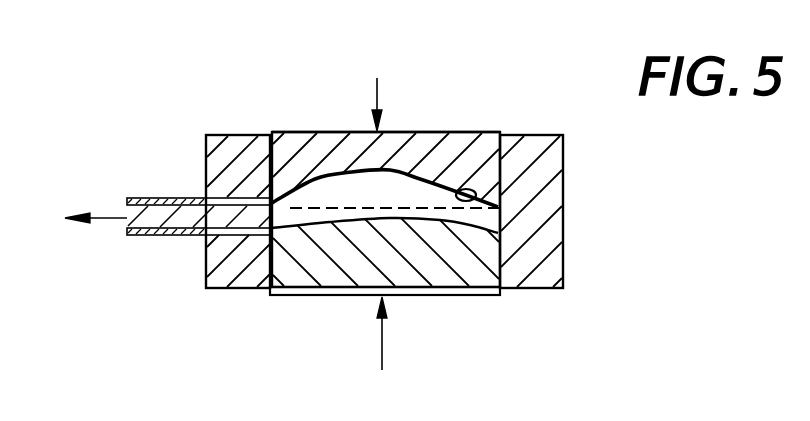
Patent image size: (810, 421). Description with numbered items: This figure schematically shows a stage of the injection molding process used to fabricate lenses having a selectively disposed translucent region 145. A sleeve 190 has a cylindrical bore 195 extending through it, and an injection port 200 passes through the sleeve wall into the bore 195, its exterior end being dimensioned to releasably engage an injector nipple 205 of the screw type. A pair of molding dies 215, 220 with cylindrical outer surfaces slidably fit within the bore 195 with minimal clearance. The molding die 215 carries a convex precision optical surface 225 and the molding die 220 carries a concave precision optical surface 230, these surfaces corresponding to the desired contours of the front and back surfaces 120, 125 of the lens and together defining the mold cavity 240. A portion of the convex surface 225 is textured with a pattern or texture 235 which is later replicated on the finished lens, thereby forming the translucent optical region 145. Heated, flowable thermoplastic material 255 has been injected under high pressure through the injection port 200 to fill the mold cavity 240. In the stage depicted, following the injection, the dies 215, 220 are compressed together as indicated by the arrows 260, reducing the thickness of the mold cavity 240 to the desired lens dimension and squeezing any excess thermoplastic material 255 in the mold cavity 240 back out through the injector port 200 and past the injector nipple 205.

The front surface 120 is at (422, 115).
The convex precision optical surface 225 is at (425, 172).
The back surface 125 is at (407, 292).
The concave precision optical surface 230 is at (448, 226).
The translucent optical region 145 is at (577, 211).
The texture 235 is at (462, 211).
The sleeve 190 is at (206, 180).
The cylindrical bore 195 is at (282, 152).
The injection port 200 is at (260, 213).
The injector nipple 205 is at (127, 240).
The molding die 215 is at (397, 152).
The molding die 220 is at (303, 255).
The mold cavity 240 is at (477, 190).
The thermoplastic material 255 is at (192, 240).
The arrows 260 is at (377, 78).